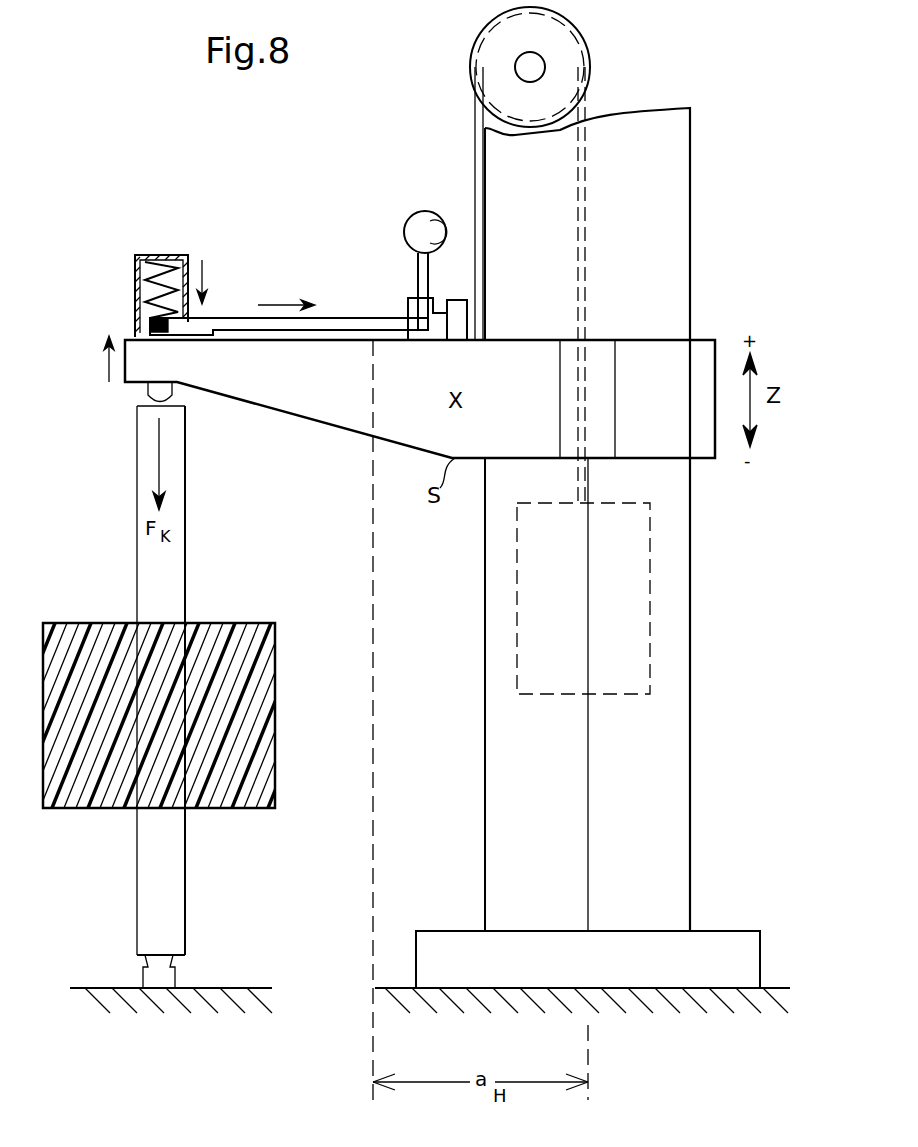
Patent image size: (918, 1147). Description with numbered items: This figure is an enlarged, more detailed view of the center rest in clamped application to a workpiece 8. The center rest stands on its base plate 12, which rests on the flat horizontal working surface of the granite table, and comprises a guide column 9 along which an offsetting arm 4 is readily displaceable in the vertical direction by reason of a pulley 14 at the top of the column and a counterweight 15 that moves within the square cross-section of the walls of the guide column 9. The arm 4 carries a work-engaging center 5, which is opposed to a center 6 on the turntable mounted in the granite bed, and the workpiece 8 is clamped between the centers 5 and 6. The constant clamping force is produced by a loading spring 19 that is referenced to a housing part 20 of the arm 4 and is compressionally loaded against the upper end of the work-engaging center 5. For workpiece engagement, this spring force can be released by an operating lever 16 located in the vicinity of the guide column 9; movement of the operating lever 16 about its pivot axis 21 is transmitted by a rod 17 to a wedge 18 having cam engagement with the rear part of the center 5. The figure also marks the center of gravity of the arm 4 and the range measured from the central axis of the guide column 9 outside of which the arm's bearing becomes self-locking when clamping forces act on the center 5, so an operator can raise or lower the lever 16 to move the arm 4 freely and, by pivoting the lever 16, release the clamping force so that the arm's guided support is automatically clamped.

The offsetting arm 4 is at (302, 392).
The work-engaging center 5 is at (150, 392).
The center 6 is at (160, 975).
The workpiece 8 is at (234, 632).
The guide column 9 is at (683, 658).
The base plate 12 is at (718, 948).
The pulley 14 is at (588, 40).
The counterweight 15 is at (650, 598).
The operating lever 16 is at (418, 250).
The rod 17 is at (343, 318).
The wedge 18 is at (150, 323).
The loading spring 19 is at (143, 280).
The housing part 20 is at (155, 257).
The pivot axis 21 is at (410, 305).